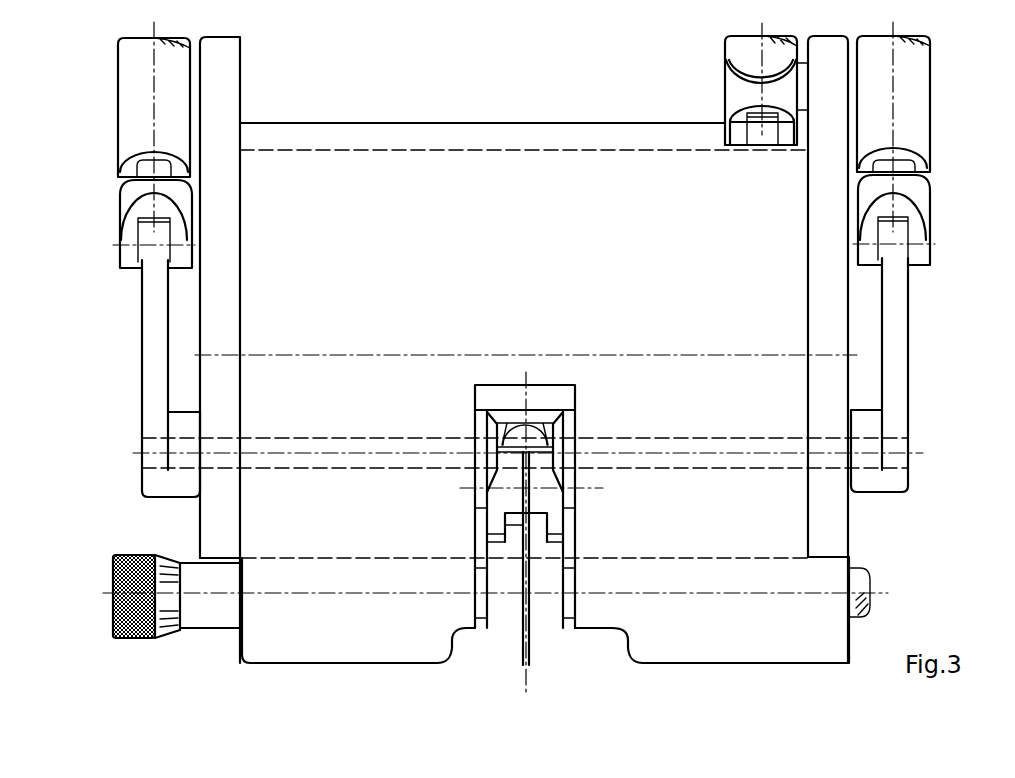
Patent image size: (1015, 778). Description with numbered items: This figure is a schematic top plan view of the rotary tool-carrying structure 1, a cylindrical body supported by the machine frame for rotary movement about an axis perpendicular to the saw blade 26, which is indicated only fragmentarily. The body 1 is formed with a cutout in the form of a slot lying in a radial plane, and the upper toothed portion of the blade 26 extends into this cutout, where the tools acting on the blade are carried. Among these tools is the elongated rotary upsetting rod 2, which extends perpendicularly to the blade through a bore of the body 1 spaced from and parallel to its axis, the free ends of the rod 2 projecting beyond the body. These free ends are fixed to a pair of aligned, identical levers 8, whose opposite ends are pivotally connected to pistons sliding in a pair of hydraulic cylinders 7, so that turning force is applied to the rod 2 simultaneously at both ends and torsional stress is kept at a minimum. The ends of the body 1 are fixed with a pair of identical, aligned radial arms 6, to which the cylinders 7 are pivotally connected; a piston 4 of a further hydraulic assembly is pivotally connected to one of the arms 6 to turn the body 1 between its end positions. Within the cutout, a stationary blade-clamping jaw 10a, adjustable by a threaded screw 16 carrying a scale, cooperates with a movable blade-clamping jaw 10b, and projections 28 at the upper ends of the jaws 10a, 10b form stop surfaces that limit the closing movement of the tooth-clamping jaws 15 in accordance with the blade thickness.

The tool-carrying structure 1 is at (583, 160).
The upsetting rod 2 is at (543, 460).
The piston 4 is at (737, 103).
The radially extending arms 6 is at (828, 98).
The cylinders 7 is at (128, 68).
The levers 8 is at (152, 317).
The blade-clamping jaw 10a is at (493, 624).
The blade-clamping jaw 10b is at (535, 623).
The clamping jaws 15 is at (553, 518).
The threaded screw 16 is at (113, 563).
The saw blade 26 is at (527, 562).
The projections 28 is at (515, 525).